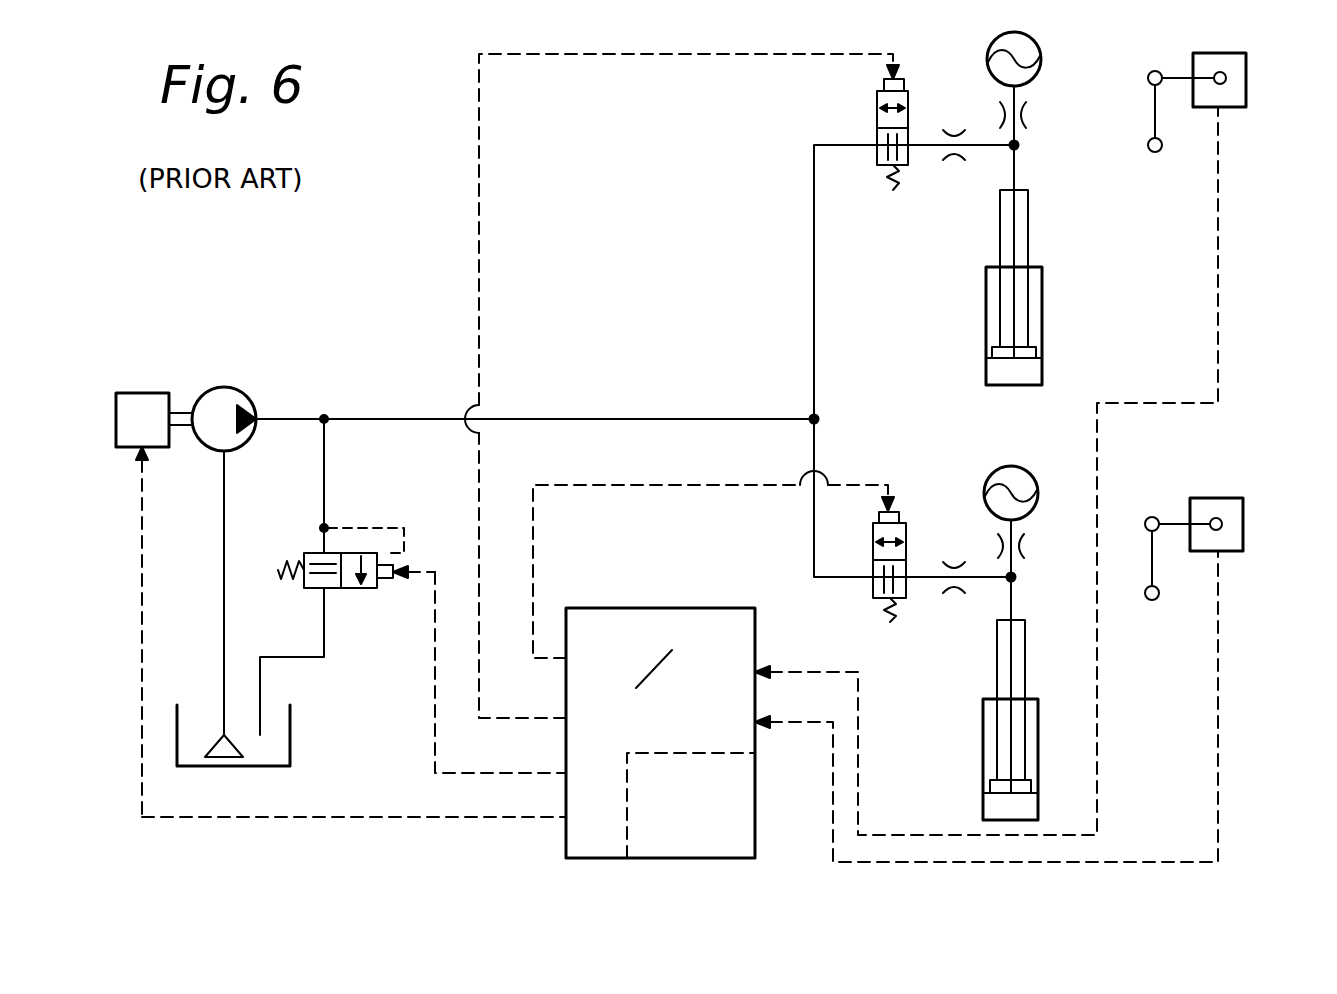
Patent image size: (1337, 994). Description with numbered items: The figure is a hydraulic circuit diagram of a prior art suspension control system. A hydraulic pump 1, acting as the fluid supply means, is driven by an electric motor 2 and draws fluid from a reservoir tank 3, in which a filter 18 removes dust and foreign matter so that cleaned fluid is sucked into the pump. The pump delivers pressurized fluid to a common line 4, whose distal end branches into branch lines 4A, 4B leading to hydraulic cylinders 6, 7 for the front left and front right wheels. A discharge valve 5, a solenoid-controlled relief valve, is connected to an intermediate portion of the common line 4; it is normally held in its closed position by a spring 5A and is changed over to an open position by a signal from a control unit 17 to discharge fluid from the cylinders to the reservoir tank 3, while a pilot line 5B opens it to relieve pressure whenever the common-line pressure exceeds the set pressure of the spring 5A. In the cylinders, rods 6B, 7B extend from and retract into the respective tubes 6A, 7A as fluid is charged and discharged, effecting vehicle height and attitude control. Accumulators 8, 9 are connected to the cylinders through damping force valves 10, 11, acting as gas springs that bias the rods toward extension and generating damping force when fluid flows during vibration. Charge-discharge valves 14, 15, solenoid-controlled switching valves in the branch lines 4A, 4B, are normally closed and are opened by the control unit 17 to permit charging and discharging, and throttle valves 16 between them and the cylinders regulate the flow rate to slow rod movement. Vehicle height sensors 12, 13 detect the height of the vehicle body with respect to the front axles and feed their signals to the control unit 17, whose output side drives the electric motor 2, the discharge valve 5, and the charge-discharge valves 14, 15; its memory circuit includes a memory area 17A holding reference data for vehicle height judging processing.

The hydraulic pump 1 is at (230, 387).
The electric motor 2 is at (143, 392).
The reservoir tank 3 is at (290, 745).
The common line 4 is at (411, 415).
The branch line 4A is at (814, 222).
The branch line 4B is at (814, 537).
The discharge valve 5 is at (316, 552).
The spring 5A is at (278, 568).
The pilot line 5B is at (358, 526).
The hydraulic cylinder 6 is at (991, 287).
The tube 6A is at (1043, 310).
The rod 6B is at (1028, 228).
The hydraulic cylinder 7 is at (985, 720).
The tube 7A is at (1039, 733).
The rod 7B is at (997, 645).
The accumulator 8 is at (1041, 57).
The accumulator 9 is at (1023, 470).
The damping force valve 10 is at (1029, 117).
The damping force valve 11 is at (1026, 548).
The vehicle height sensor 12 is at (1246, 78).
The vehicle height sensor 13 is at (1243, 520).
The charge-discharge valve 14 is at (908, 100).
The charge-discharge valve 15 is at (906, 528).
The throttle valve 16 is at (951, 162).
The control unit 17 is at (606, 607).
The memory area 17A is at (752, 800).
The filter 18 is at (218, 735).